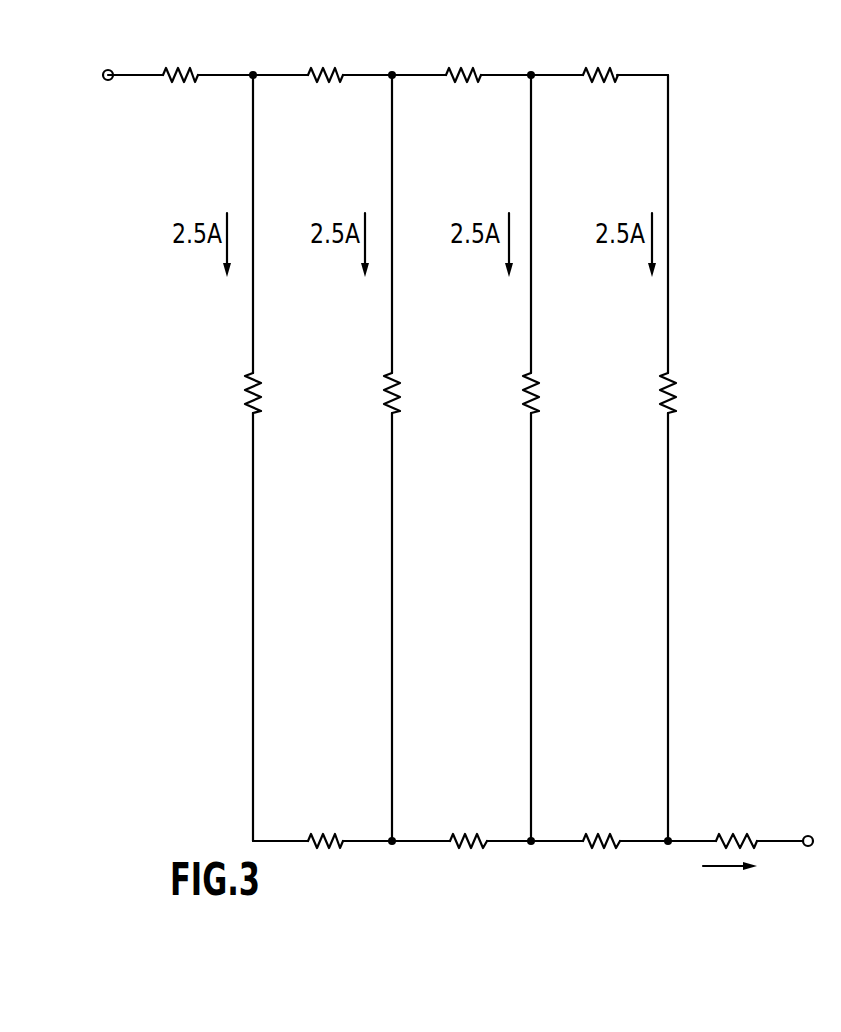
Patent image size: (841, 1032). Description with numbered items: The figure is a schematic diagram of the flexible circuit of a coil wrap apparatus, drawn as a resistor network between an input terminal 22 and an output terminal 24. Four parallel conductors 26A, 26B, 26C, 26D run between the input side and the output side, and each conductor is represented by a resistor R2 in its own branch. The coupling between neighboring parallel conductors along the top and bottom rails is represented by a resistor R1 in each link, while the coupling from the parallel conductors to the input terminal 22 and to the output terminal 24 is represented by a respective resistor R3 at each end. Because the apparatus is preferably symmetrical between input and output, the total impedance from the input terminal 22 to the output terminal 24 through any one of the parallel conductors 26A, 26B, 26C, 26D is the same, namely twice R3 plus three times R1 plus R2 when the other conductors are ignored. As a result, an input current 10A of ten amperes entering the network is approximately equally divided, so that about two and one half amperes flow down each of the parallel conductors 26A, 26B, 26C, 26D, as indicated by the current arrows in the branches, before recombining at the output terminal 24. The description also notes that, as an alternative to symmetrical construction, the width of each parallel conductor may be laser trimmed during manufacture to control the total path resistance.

The input terminal 22 is at (108, 81).
The output terminal 24 is at (810, 846).
The parallel conductor 26A is at (253, 312).
The parallel conductor 26B is at (392, 313).
The parallel conductor 26C is at (531, 327).
The parallel conductor 26D is at (667, 326).
The input current 10A is at (718, 868).
The coupling resistor R1 is at (464, 461).
The parallel conductor resistor R2 is at (239, 389).
The terminal coupling resistor R3 is at (460, 440).